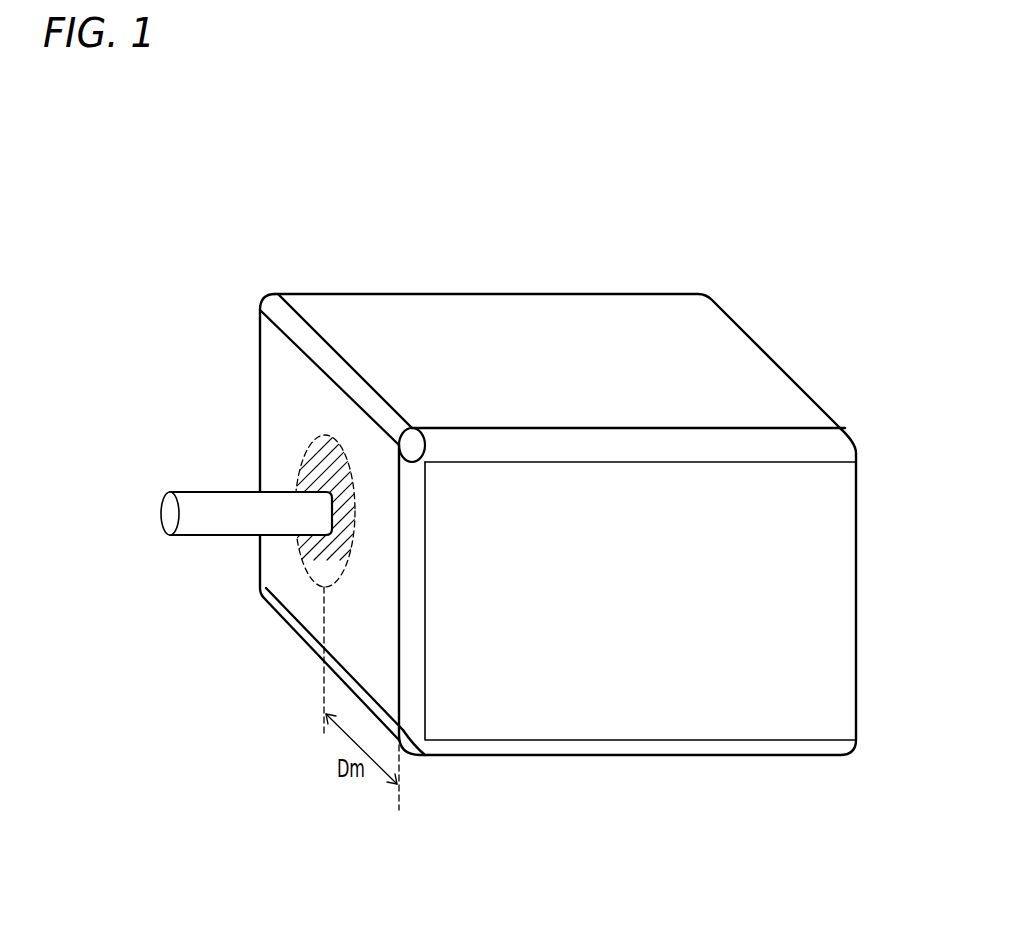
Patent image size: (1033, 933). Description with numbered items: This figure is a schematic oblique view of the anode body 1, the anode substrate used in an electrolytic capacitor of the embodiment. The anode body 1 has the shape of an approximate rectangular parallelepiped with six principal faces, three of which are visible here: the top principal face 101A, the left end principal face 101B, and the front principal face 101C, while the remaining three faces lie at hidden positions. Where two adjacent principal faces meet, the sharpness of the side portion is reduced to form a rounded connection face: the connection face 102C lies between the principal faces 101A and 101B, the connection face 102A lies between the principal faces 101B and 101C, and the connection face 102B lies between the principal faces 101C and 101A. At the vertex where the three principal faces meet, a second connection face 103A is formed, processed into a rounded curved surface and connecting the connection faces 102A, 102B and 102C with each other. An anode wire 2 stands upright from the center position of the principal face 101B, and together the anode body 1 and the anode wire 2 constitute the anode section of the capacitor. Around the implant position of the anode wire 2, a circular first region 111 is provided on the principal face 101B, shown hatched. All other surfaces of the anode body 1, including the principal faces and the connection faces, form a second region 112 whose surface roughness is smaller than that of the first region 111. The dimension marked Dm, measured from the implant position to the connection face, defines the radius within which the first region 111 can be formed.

The anode body 1 is at (490, 503).
The anode wire 2 is at (205, 518).
The principal face 101A is at (497, 345).
The principal face 101B is at (295, 432).
The principal face 101C is at (662, 652).
The connection face 102A is at (410, 612).
The connection face 102B is at (610, 447).
The connection face 102C is at (312, 345).
The second connection face 103A is at (412, 443).
The first region 111 is at (307, 472).
The second region 112 is at (295, 390).